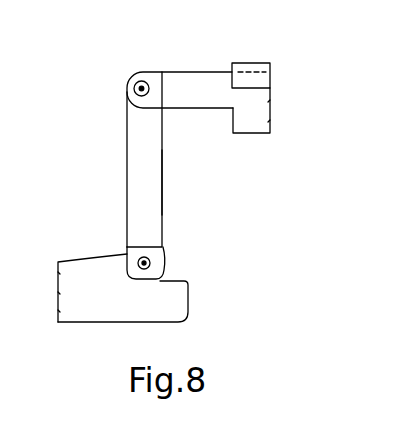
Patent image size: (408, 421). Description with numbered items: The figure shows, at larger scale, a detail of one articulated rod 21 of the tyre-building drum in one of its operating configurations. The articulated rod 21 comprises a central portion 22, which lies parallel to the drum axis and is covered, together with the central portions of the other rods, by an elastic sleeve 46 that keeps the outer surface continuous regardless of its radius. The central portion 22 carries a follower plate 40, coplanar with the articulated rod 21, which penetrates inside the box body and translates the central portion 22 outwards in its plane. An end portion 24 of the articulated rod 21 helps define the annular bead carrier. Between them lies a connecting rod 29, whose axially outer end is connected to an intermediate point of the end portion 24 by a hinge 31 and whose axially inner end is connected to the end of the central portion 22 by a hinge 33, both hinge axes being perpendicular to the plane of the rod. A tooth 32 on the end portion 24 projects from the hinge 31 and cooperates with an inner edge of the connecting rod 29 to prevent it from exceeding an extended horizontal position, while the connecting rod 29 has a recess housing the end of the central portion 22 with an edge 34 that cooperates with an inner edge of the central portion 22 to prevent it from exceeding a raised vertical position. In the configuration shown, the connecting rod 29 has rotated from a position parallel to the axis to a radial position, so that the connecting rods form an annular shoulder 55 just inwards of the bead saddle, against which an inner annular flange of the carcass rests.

The articulated rod 21 is at (122, 140).
The central portion 22 is at (188, 92).
The end portion 24 is at (95, 284).
The connecting rod 29 is at (143, 153).
The hinge 31 is at (148, 262).
The tooth 32 is at (163, 302).
The hinge 33 is at (141, 81).
The edge 34 is at (160, 95).
The follower plate 40 is at (248, 122).
The elastic sleeve 46 is at (250, 83).
The annular shoulder 55 is at (163, 182).